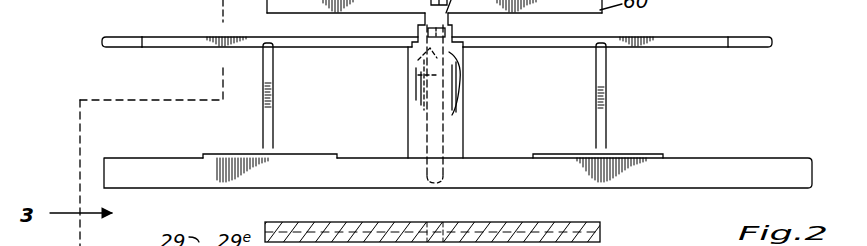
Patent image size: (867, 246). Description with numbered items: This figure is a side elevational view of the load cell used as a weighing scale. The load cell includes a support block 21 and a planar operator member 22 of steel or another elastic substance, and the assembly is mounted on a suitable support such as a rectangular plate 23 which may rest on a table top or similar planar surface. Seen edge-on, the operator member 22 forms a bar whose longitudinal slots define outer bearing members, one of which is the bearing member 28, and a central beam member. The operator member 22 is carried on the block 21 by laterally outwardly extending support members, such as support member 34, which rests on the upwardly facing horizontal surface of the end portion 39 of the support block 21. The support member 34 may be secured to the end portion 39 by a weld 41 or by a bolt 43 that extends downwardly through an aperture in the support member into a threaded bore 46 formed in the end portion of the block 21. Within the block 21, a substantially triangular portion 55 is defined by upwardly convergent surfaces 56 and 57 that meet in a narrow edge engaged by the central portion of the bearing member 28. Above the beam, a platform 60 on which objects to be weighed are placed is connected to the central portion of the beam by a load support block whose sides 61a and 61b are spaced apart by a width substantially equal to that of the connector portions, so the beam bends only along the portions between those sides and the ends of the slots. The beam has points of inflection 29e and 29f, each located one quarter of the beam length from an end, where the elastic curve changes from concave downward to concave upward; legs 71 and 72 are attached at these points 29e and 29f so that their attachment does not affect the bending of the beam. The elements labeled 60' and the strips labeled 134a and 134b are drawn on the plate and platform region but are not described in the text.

The support block 21 is at (403, 154).
The operator member 22 is at (121, 49).
The rectangular plate 23 is at (130, 180).
The bearing member 28 is at (540, 45).
The point of inflection 29e is at (268, 38).
The point of inflection 29f is at (601, 38).
The support member 34 is at (463, 120).
The end portion of the support block 39 is at (408, 127).
The weld 41 is at (460, 44).
The bolt 43 is at (420, 31).
The threaded bore 46 is at (434, 188).
The triangular portion 55 is at (408, 97).
The upwardly convergent surface 56 is at (416, 56).
The upwardly convergent surface 57 is at (460, 65).
The platform 60 is at (442, 222).
The support bar portion 60' is at (635, 236).
The side of the load support block 61a is at (451, 24).
The side of the load support block 61b is at (418, 26).
The leg 71 is at (274, 81).
The leg 72 is at (606, 77).
The left strip 134a is at (213, 156).
The right strip 134b is at (637, 156).